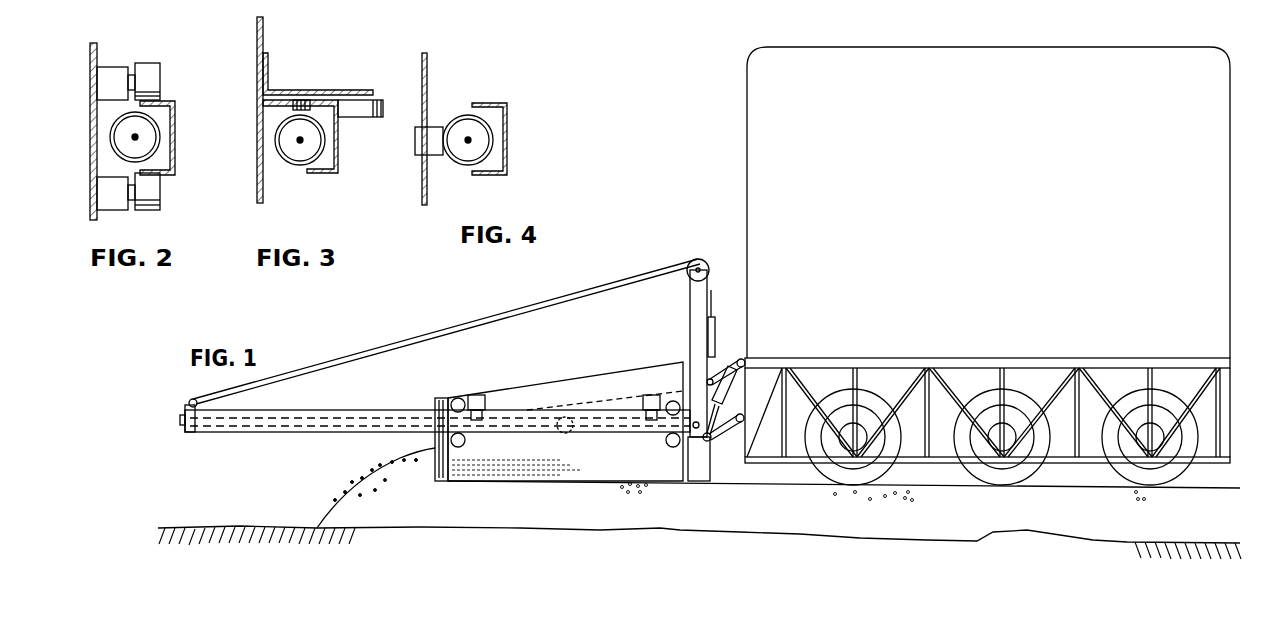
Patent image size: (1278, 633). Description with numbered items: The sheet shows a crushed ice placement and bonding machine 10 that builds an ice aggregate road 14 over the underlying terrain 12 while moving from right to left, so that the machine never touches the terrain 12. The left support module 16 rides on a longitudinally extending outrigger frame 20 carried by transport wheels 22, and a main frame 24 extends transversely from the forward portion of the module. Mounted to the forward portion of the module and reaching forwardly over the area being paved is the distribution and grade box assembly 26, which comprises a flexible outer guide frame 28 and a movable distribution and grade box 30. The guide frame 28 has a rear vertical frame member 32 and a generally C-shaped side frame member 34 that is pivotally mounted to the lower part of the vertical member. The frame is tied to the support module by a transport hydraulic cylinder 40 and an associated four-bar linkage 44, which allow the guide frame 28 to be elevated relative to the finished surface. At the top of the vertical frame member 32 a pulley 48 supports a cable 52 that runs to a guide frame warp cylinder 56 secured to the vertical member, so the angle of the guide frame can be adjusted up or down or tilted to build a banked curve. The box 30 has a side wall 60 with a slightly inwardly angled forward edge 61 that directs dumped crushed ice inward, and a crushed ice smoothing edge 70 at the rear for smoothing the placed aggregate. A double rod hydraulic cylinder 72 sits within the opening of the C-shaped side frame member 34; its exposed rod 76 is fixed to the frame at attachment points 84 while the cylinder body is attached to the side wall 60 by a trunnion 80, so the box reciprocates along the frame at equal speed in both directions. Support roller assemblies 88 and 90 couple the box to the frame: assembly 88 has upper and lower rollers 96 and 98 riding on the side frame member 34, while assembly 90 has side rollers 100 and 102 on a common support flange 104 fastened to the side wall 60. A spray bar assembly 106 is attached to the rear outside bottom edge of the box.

In FIG. 1, the crushed ice placement and bonding machine 10 is at (657, 207).
In FIG. 1, the underlying terrain 12 is at (598, 531).
In FIG. 1, the ice aggregate road 14 is at (1082, 487).
In FIG. 1, the left support module 16 is at (948, 47).
In FIG. 1, the outrigger frame 20 is at (1012, 358).
In FIG. 1, the transport wheels 22 is at (880, 390).
In FIG. 1, the main frame 24 is at (773, 368).
In FIG. 1, the distribution and grade box assembly 26 is at (426, 315).
In FIG. 1, the outer guide frame 28 is at (258, 410).
In FIG. 1, the distribution and grade box 30 is at (583, 365).
In FIG. 1, the rear vertical frame member 32 is at (690, 330).
In FIG. 2, the left side frame member 34 is at (177, 128).
In FIG. 3, the left side frame member 34 is at (300, 136).
In FIG. 4, the left side frame member 34 is at (508, 127).
In FIG. 1, the left side frame member 34 is at (322, 410).
In FIG. 1, the left transport hydraulic cylinder 40 is at (756, 360).
In FIG. 1, the four-bar linkage 44 is at (712, 448).
In FIG. 1, the pulley 48 is at (698, 258).
In FIG. 1, the cable 52 is at (470, 326).
In FIG. 1, the left guide frame warp cylinder 56 is at (715, 330).
In FIG. 2, the side wall 60 is at (93, 130).
In FIG. 3, the side wall 60 is at (264, 32).
In FIG. 4, the side wall 60 is at (428, 64).
In FIG. 1, the side wall 60 is at (527, 385).
In FIG. 1, the inwardly angled edge 61 is at (441, 483).
In FIG. 1, the crushed ice smoothing edge 70 is at (680, 483).
In FIG. 2, the left double rod hydraulic cylinder 72 is at (135, 137).
In FIG. 3, the left double rod hydraulic cylinder 72 is at (292, 162).
In FIG. 4, the left double rod hydraulic cylinder 72 is at (455, 118).
In FIG. 1, the left double rod hydraulic cylinder 72 is at (536, 432).
In FIG. 4, the cylinder rod 76 is at (465, 144).
In FIG. 1, the cylinder rod 76 is at (296, 432).
In FIG. 1, the trunnion 80 is at (566, 434).
In FIG. 1, the rod attachment point 84 is at (180, 420).
In FIG. 1, the support roller assembly 88 is at (455, 398).
In FIG. 1, the support roller assembly 90 is at (478, 395).
In FIG. 2, the upper roller 96 is at (160, 82).
In FIG. 2, the lower roller 98 is at (160, 196).
In FIG. 3, the side roller 100 is at (299, 100).
In FIG. 3, the side roller 102 is at (355, 117).
In FIG. 3, the common support flange 104 is at (270, 64).
In FIG. 1, the spray bar assembly 106 is at (716, 472).